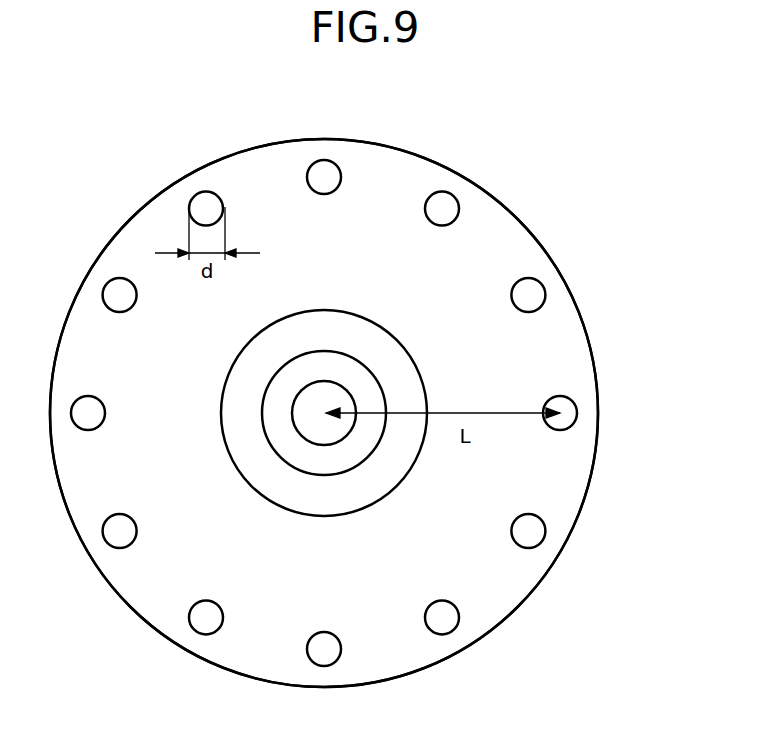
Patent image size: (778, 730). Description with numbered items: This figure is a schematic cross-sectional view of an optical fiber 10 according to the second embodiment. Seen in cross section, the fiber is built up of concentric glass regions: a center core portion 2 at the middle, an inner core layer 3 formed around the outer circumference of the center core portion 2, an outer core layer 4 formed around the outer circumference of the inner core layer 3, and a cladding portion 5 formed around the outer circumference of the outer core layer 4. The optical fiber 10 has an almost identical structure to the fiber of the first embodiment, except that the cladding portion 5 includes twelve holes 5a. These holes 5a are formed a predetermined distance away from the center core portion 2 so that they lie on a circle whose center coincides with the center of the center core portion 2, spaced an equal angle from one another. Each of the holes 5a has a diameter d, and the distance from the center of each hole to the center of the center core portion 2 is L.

The optical fiber 10 is at (568, 176).
The center core portion 2 is at (322, 398).
The inner core layer 3 is at (359, 382).
The outer core layer 4 is at (403, 388).
The cladding portion 5 is at (568, 492).
The holes 5a is at (532, 543).